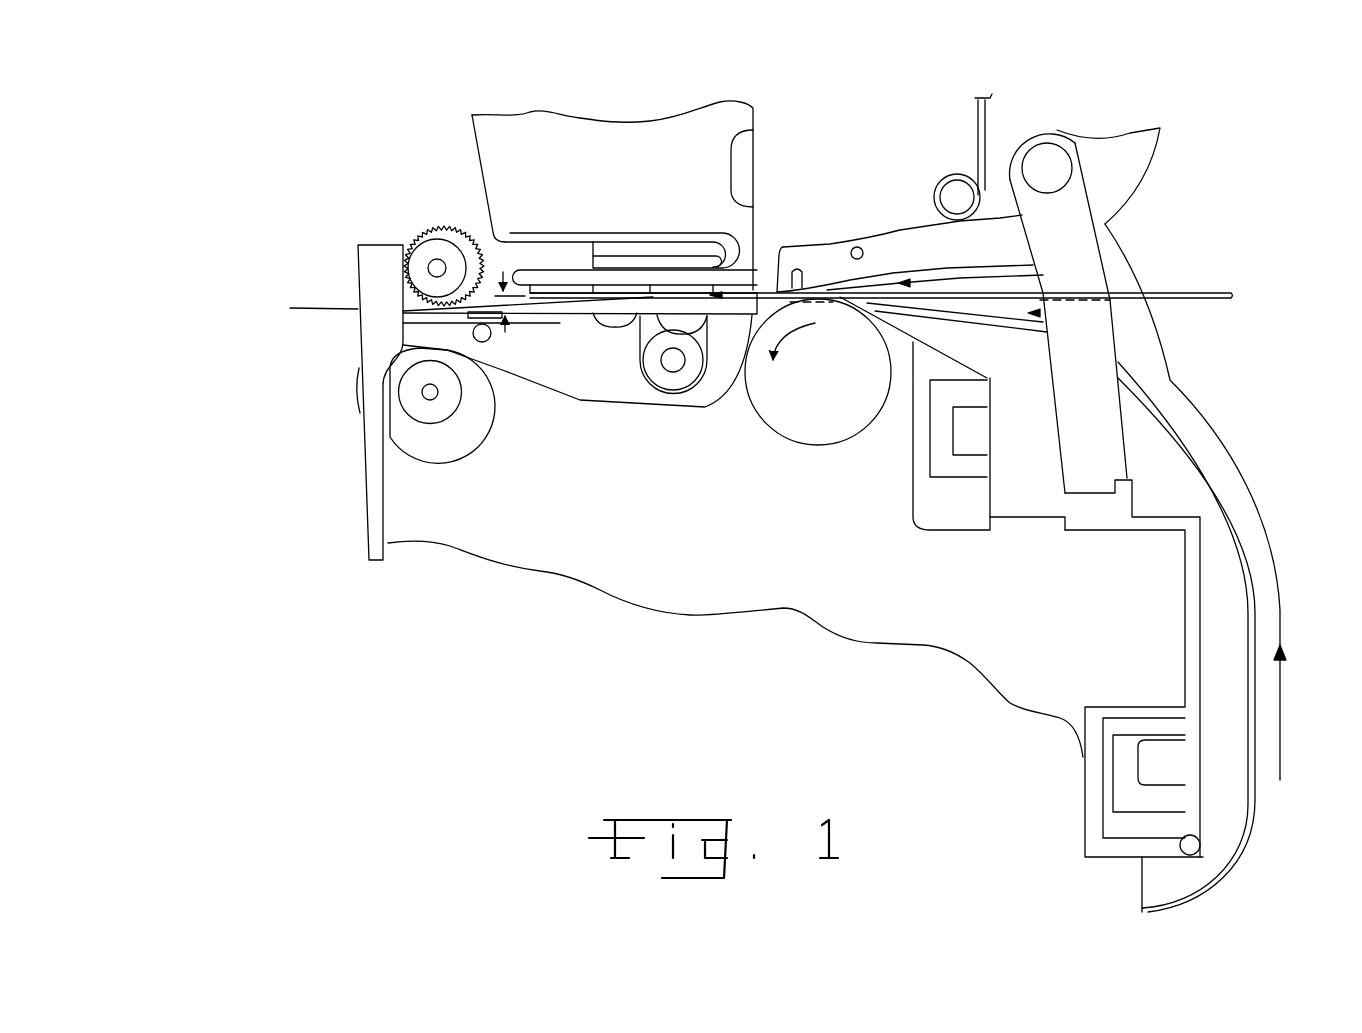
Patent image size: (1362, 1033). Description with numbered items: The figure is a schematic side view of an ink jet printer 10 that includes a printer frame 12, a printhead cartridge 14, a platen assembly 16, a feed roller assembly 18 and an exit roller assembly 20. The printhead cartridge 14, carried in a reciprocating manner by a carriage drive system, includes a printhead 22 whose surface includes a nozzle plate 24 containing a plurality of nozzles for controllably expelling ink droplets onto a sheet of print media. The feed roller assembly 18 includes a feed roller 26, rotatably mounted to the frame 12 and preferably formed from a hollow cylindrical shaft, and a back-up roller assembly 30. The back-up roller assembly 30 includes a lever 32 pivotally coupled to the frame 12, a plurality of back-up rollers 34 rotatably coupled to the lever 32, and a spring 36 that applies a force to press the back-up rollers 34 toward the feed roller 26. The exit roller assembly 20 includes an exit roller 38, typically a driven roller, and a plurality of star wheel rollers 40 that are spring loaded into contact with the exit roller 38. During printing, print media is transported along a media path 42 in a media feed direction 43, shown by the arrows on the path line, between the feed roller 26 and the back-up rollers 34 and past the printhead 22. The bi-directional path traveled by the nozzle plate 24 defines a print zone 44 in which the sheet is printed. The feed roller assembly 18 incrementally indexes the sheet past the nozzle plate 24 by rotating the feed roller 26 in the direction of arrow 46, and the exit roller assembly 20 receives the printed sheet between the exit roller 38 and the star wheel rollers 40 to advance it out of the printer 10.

The ink jet printer 10 is at (205, 178).
The printer frame 12 is at (725, 560).
The printhead cartridge 14 is at (760, 112).
The platen assembly 16 is at (568, 361).
The feed roller assembly 18 is at (828, 452).
The exit roller assembly 20 is at (403, 185).
The printhead 22 is at (705, 268).
The nozzle plate 24 is at (648, 300).
The feed roller 26 is at (757, 408).
The back-up roller assembly 30 is at (1060, 108).
The lever 32 is at (1133, 170).
The back-up rollers 34 is at (800, 270).
The spring 36 is at (975, 128).
The exit roller 38 is at (465, 458).
The star wheel rollers 40 is at (438, 226).
The media path 42 is at (322, 309).
The media feed direction 43 is at (292, 307).
The print zone 44 is at (656, 345).
The arrow 46 is at (786, 348).